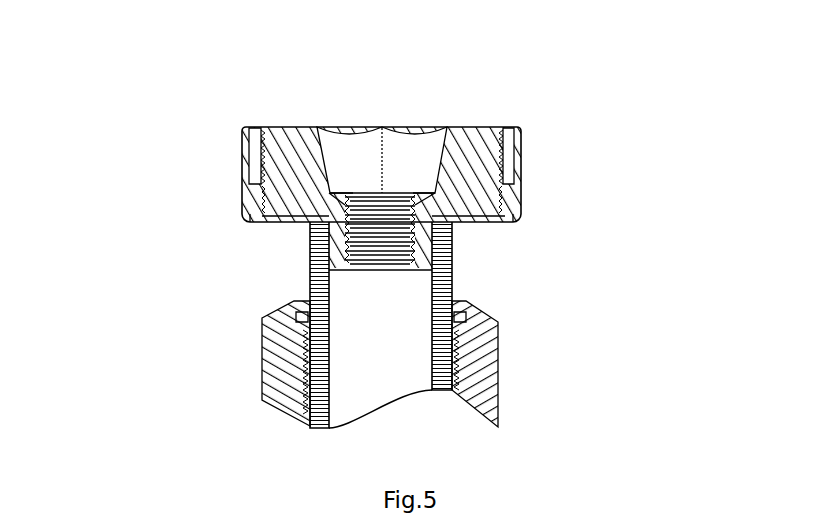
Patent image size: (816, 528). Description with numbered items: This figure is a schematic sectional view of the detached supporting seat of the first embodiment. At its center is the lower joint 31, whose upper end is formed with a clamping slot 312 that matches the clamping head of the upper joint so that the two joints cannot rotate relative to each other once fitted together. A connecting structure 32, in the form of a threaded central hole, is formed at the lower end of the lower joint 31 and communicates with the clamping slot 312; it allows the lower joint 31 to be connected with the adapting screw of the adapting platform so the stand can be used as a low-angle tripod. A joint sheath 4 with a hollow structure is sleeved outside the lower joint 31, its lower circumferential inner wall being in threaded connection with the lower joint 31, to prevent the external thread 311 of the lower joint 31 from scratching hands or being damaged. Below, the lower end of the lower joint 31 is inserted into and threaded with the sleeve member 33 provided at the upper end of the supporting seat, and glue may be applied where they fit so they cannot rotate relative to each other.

The joint sheath 4 is at (518, 147).
The lower joint 31 is at (523, 187).
The external thread 311 is at (262, 159).
The clamping slot 312 is at (262, 159).
The connecting structure 32 is at (322, 245).
The sleeve member 33 is at (453, 248).